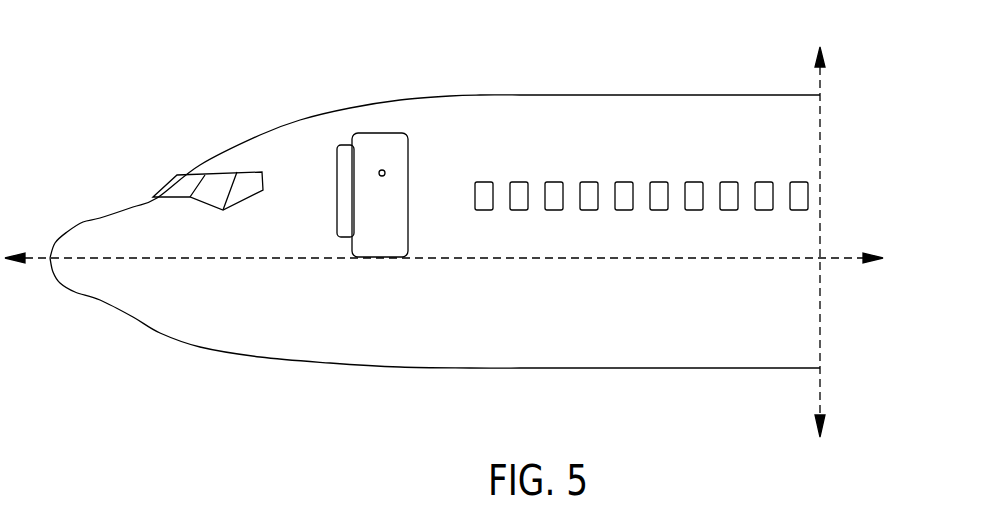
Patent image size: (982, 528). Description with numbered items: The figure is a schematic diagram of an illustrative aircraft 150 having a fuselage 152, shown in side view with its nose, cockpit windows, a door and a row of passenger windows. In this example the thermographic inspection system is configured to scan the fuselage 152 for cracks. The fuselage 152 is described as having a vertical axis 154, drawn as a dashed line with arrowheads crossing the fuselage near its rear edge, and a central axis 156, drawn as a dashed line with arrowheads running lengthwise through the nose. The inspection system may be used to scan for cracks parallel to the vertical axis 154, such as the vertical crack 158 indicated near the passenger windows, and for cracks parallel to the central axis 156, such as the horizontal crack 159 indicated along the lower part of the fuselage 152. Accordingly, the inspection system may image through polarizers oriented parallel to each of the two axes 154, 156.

The aircraft 150 is at (98, 218).
The fuselage 152 is at (613, 95).
The vertical axis 154 is at (820, 95).
The central axis 156 is at (837, 253).
The vertical crack 158 is at (445, 200).
The horizontal crack 159 is at (760, 303).